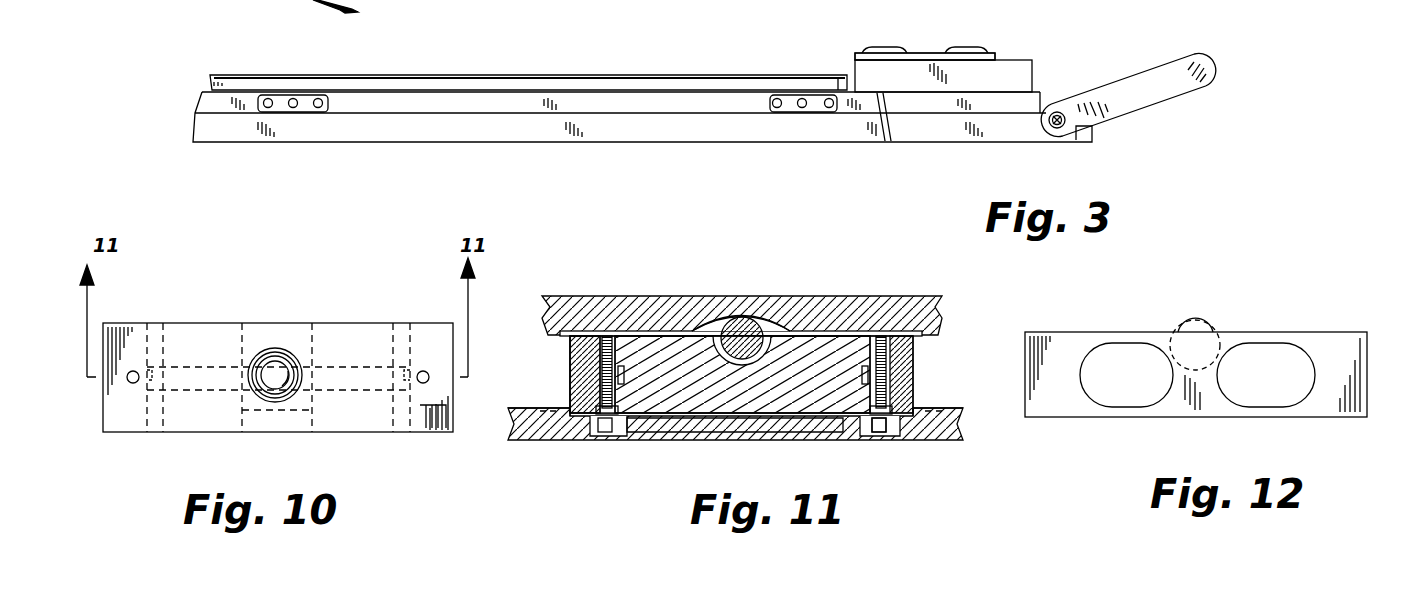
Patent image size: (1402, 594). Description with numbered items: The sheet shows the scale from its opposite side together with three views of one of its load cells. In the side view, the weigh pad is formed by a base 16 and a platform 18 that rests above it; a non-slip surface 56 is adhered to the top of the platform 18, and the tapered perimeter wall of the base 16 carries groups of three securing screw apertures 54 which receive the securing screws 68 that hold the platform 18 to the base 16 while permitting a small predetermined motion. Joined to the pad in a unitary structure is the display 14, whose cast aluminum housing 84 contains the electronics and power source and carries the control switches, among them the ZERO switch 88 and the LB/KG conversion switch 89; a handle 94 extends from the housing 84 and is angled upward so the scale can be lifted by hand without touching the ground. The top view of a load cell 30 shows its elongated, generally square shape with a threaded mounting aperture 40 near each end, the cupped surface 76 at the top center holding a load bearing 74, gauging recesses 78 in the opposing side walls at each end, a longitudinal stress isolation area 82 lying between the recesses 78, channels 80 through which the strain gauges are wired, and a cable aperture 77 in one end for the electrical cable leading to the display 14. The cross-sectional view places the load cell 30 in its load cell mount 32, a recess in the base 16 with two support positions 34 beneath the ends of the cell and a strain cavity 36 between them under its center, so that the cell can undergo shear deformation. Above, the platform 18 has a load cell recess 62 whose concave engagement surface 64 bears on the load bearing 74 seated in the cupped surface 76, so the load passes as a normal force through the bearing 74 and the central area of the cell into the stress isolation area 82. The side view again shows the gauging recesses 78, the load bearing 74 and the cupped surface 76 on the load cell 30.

In FIG. 3, the display 14 is at (938, 48).
In FIG. 3, the base 16 is at (160, 109).
In FIG. 11, the base 16 is at (944, 462).
In FIG. 3, the platform 18 is at (192, 74).
In FIG. 11, the platform 18 is at (604, 285).
In FIG. 10, the load cell 30 is at (238, 288).
In FIG. 11, the load cell 30 is at (950, 352).
In FIG. 12, the load cell 30 is at (1092, 440).
In FIG. 11, the load cell mount 32 is at (548, 402).
In FIG. 11, the support position 34 is at (925, 408).
In FIG. 11, the strain cavity 36 is at (754, 418).
In FIG. 10, the mounting aperture 40 is at (132, 384).
In FIG. 3, the securing screw aperture 54 is at (318, 108).
In FIG. 3, the non-slip surface 56 is at (307, 77).
In FIG. 11, the load cell recess 62 is at (560, 345).
In FIG. 11, the concave engagement surface 64 is at (787, 330).
In FIG. 11, the securing screw 68 is at (882, 434).
In FIG. 10, the load bearing 74 is at (272, 392).
In FIG. 11, the load bearing 74 is at (745, 318).
In FIG. 12, the load bearing 74 is at (1207, 326).
In FIG. 10, the cupped surface 76 is at (296, 395).
In FIG. 11, the cupped surface 76 is at (696, 330).
In FIG. 12, the cupped surface 76 is at (1172, 322).
In FIG. 10, the cable aperture 77 is at (448, 415).
In FIG. 10, the gauging recess 78 is at (170, 323).
In FIG. 12, the gauging recess 78 is at (1108, 352).
In FIG. 10, the channel 80 is at (405, 375).
In FIG. 11, the channel 80 is at (628, 420).
In FIG. 10, the stress isolation area 82 is at (204, 372).
In FIG. 11, the stress isolation area 82 is at (668, 365).
In FIG. 3, the housing 84 is at (1032, 60).
In FIG. 3, the ZERO control switch 88 is at (975, 52).
In FIG. 3, the LB/KG conversion control switch 89 is at (877, 52).
In FIG. 3, the handle 94 is at (1168, 95).